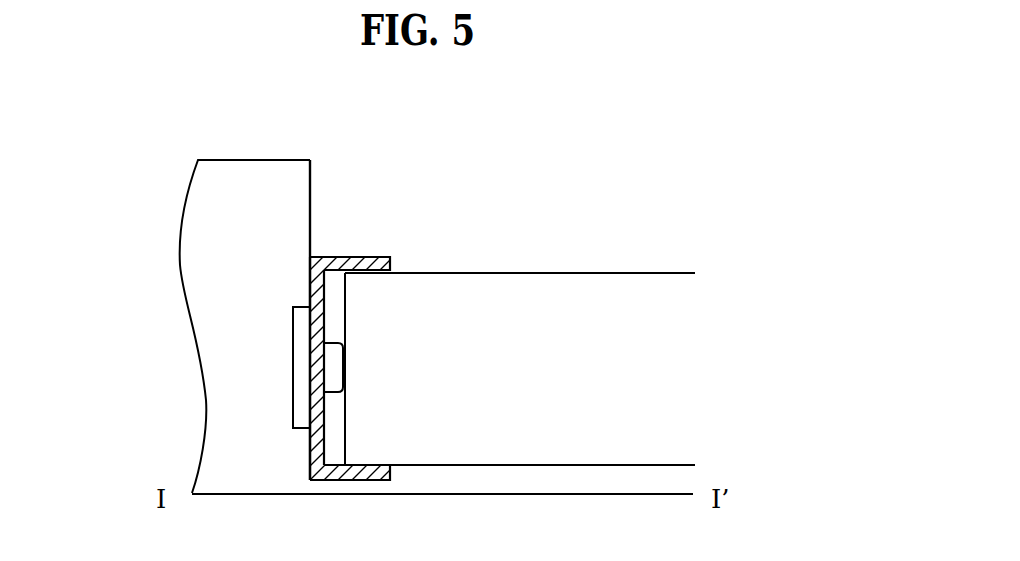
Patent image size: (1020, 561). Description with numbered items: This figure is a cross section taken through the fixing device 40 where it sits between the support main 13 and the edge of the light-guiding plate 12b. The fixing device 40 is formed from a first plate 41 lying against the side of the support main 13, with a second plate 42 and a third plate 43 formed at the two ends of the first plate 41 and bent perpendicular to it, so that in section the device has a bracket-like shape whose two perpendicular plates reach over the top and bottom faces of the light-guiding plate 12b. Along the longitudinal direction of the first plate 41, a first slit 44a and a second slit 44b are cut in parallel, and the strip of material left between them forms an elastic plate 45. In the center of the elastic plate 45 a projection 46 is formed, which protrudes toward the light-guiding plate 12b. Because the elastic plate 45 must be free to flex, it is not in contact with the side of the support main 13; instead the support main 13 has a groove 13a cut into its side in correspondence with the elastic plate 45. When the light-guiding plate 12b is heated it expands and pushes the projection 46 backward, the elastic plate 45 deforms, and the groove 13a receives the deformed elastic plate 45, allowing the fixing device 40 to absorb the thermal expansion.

The light-guiding plate 12b is at (545, 442).
The support main 13 is at (237, 468).
The groove 13a is at (298, 370).
The fixing device 40 is at (284, 364).
The first plate 41 is at (310, 440).
The second plate 42 is at (355, 267).
The third plate 43 is at (348, 473).
The first slit 44a is at (317, 327).
The second slit 44b is at (317, 412).
The elastic plate 45 is at (313, 353).
The projection 46 is at (332, 370).